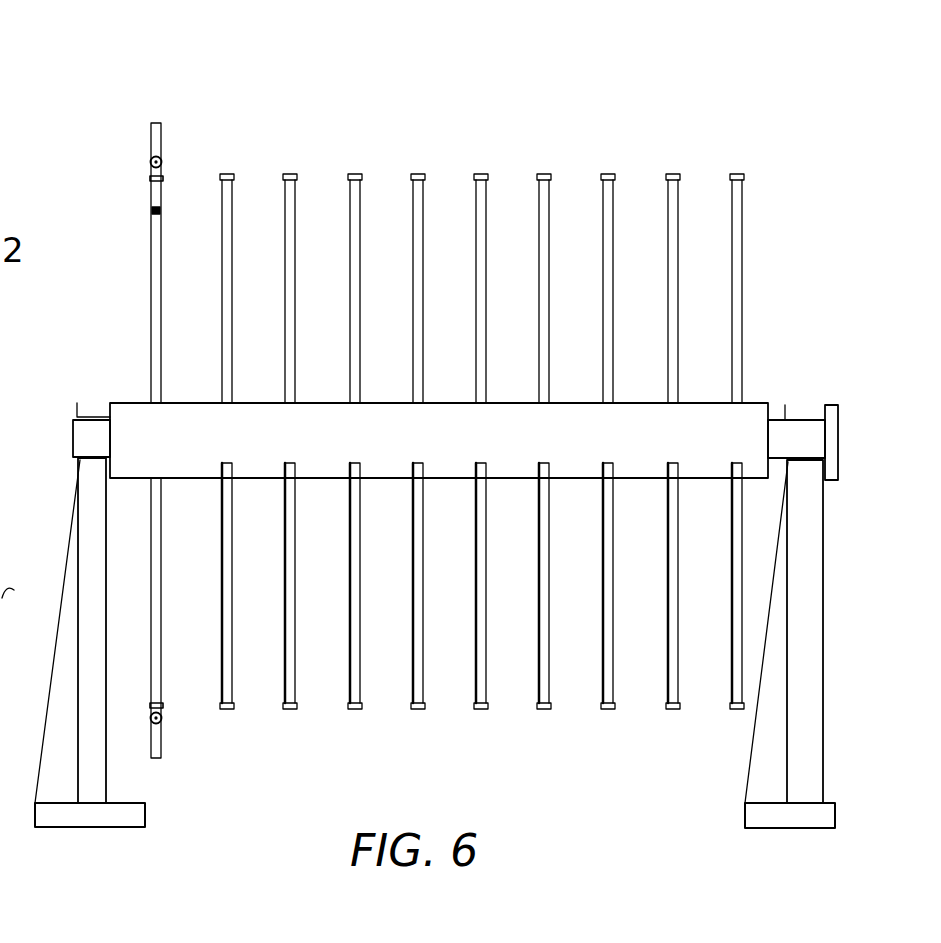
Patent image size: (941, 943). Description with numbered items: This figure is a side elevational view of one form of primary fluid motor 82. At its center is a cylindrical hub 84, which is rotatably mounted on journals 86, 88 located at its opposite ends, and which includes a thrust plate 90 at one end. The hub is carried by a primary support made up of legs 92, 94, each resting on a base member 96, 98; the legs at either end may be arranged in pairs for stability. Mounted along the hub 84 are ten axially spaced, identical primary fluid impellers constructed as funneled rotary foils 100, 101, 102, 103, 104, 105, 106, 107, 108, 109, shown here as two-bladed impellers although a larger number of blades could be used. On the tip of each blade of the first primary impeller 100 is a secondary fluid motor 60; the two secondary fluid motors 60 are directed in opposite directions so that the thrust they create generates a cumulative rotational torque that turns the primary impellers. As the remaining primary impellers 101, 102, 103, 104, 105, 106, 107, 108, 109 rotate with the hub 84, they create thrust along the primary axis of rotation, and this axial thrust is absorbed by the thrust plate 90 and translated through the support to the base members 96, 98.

The primary fluid motor 82 is at (418, 116).
The cylindrical hub 84 is at (137, 402).
The journal 86 is at (92, 452).
The journal 88 is at (805, 455).
The thrust plate 90 is at (838, 412).
The leg 92 is at (78, 670).
The leg 94 is at (823, 662).
The base member 96 is at (145, 813).
The base member 98 is at (743, 813).
The secondary fluid motor 60 is at (150, 162).
The primary fluid impeller 100 is at (161, 207).
The primary fluid impeller 101 is at (232, 207).
The primary fluid impeller 102 is at (295, 210).
The primary fluid impeller 103 is at (360, 217).
The primary fluid impeller 104 is at (423, 215).
The primary fluid impeller 105 is at (486, 212).
The primary fluid impeller 106 is at (549, 212).
The primary fluid impeller 107 is at (613, 212).
The primary fluid impeller 108 is at (678, 208).
The primary fluid impeller 109 is at (742, 213).